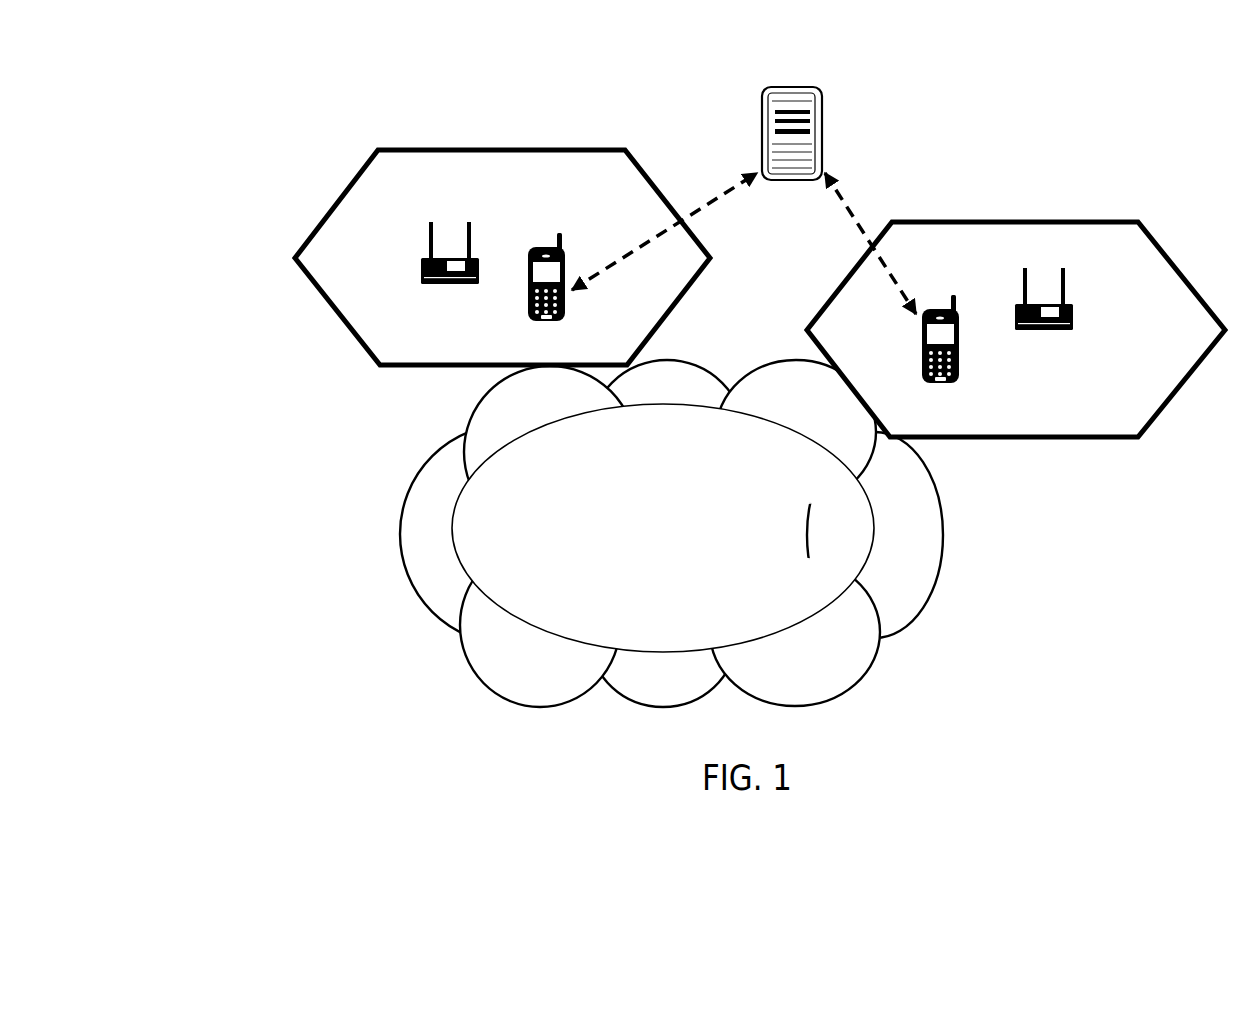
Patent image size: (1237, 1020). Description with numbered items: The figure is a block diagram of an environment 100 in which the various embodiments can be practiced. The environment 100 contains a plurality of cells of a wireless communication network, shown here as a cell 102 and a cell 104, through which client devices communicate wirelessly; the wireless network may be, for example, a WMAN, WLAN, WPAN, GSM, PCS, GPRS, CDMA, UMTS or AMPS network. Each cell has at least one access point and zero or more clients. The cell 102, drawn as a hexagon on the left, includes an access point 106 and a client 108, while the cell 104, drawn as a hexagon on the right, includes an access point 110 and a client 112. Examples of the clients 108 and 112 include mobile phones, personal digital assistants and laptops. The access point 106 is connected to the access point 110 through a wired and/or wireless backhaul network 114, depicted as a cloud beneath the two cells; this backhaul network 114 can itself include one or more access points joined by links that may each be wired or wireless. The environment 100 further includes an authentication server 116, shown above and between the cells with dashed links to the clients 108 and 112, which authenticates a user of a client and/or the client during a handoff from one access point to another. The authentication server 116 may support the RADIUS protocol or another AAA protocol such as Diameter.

The environment 100 is at (283, 652).
The cell 102 is at (503, 150).
The cell 104 is at (1013, 221).
The access point 106 is at (448, 284).
The client 108 is at (560, 240).
The access point 110 is at (1046, 330).
The client 112 is at (953, 304).
The wired and/or wireless backhaul network 114 is at (944, 532).
The authentication server 116 is at (788, 182).